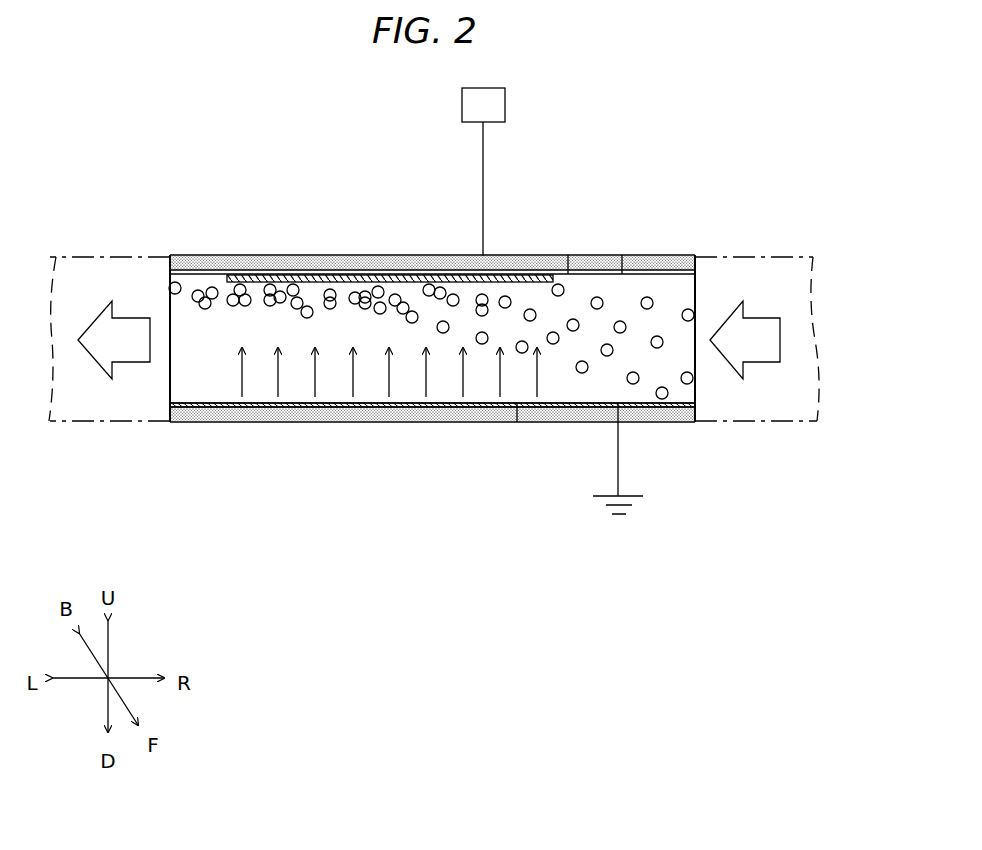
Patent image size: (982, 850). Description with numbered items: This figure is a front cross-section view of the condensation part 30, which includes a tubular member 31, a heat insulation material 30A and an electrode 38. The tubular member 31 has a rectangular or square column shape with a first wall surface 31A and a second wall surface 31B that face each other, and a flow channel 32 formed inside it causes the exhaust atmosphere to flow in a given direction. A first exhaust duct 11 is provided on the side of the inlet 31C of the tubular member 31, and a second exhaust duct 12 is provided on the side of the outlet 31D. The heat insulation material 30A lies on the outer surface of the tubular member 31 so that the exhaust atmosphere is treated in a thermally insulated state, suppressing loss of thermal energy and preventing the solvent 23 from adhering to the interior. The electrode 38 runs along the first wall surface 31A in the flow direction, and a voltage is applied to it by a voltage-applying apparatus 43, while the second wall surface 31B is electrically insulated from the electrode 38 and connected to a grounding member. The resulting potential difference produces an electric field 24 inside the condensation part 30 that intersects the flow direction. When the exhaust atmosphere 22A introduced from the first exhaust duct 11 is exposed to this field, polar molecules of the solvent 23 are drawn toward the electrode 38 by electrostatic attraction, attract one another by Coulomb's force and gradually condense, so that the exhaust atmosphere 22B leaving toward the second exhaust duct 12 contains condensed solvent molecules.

The first exhaust duct 11 is at (775, 252).
The second exhaust duct 12 is at (80, 252).
The exhaust atmosphere introduced from the first exhaust duct 22A is at (763, 312).
The exhaust atmosphere including condensed molecules 22B is at (135, 312).
The solvent 23 is at (429, 284).
The electric field 24 is at (306, 382).
The condensation part 30 is at (584, 189).
The heat insulation material 30A is at (268, 256).
The tubular member 31 is at (568, 256).
The first wall surface 31A is at (621, 256).
The second wall surface 31B is at (518, 422).
The inlet 31C is at (676, 290).
The outlet 31D is at (182, 256).
The flow channel 32 is at (197, 390).
The electrode 38 is at (370, 273).
The voltage-applying apparatus 43 is at (505, 103).